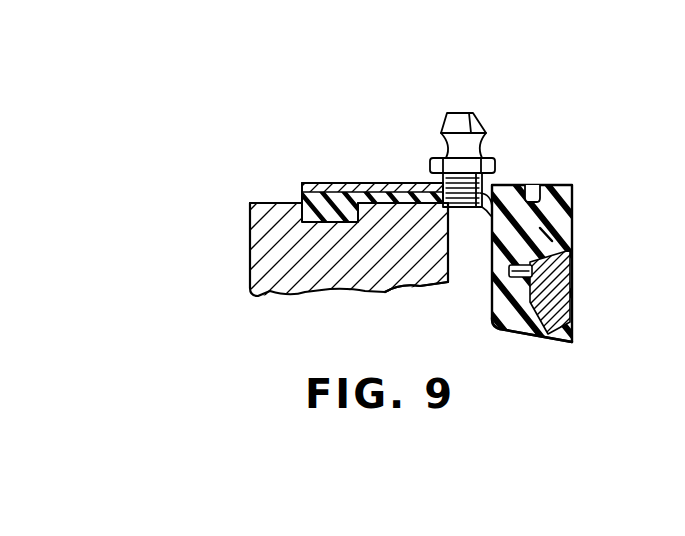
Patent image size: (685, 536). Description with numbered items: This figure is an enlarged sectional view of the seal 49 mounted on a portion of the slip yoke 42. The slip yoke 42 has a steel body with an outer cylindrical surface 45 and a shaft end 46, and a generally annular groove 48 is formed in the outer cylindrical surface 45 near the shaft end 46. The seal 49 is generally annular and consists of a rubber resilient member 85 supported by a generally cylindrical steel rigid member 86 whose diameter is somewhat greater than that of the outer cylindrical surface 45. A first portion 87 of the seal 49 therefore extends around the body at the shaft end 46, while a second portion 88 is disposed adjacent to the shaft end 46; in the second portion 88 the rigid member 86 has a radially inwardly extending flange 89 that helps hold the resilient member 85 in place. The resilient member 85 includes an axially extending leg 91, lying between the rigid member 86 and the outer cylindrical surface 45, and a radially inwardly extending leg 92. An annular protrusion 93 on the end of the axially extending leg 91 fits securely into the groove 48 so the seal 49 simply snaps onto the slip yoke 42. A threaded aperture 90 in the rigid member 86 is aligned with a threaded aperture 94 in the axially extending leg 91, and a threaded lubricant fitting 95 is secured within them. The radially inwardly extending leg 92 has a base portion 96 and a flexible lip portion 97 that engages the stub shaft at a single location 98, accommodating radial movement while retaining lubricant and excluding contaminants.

The slip yoke 42 is at (243, 264).
The outer cylindrical surface 45 is at (272, 203).
The shaft end 46 is at (425, 283).
The annular groove 48 is at (307, 221).
The seal 49 is at (506, 108).
The resilient member 85 is at (582, 192).
The rigid member 86 is at (395, 178).
The first portion 87 is at (327, 182).
The second portion 88 is at (531, 183).
The radially inwardly extending flange 89 is at (553, 227).
The threaded aperture 90 is at (424, 188).
The axially extending leg 91 is at (367, 187).
The radially inwardly extending leg 92 is at (492, 322).
The annular protrusion 93 is at (332, 222).
The threaded aperture 94 is at (482, 206).
The threaded lubricant fitting 95 is at (470, 111).
The base portion 96 is at (560, 262).
The flexible lip portion 97 is at (538, 330).
The single location 98 is at (565, 346).